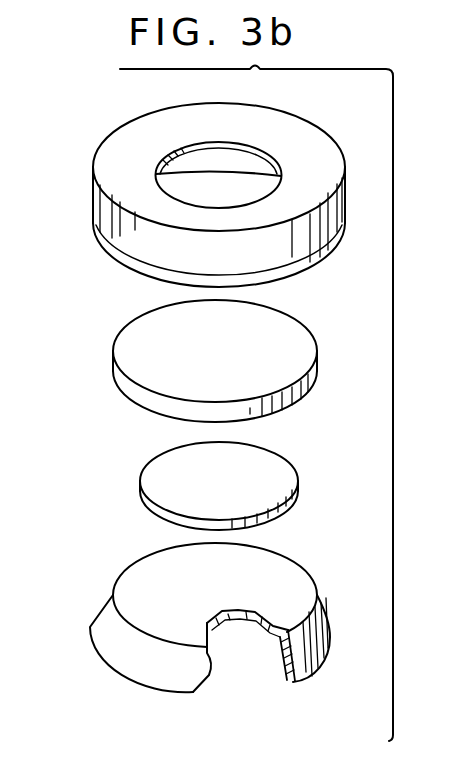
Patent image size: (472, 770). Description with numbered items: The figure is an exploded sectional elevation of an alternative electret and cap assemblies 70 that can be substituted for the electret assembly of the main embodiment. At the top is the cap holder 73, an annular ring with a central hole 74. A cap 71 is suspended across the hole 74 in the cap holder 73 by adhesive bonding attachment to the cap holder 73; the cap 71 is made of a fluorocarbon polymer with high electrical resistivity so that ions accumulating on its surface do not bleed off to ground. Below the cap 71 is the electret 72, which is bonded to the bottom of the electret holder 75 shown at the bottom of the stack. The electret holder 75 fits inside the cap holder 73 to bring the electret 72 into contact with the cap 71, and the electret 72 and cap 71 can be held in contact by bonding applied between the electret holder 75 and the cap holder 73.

The electret and cap assemblies 70 is at (95, 357).
The cap 71 is at (142, 403).
The electret 72 is at (160, 486).
The cap holder 73 is at (98, 213).
The hole 74 is at (268, 153).
The electret holder 75 is at (112, 594).